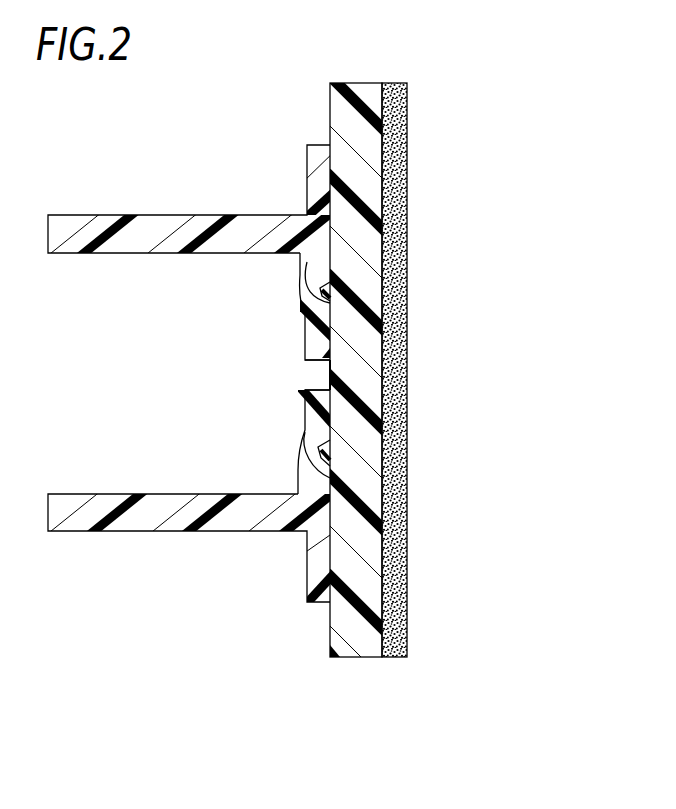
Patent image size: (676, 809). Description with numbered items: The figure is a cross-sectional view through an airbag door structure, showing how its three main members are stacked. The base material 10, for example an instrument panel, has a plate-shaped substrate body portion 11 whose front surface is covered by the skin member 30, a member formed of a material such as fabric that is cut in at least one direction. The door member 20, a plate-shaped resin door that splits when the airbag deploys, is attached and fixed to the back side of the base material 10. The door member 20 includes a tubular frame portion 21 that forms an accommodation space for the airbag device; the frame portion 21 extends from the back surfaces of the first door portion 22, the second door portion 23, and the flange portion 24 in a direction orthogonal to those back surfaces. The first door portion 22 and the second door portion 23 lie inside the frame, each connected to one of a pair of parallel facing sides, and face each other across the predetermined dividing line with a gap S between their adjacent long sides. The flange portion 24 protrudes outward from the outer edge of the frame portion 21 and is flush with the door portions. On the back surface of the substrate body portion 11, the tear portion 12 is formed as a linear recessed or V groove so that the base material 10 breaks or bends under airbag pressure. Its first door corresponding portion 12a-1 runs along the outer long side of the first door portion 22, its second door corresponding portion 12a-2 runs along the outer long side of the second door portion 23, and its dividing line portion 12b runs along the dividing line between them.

The base material 10 is at (454, 407).
The substrate body portion 11 is at (454, 402).
The tear portion 12 is at (454, 354).
The first door corresponding portion 12a-1 is at (322, 290).
The second door corresponding portion 12a-2 is at (345, 452).
The dividing line portion 12b is at (345, 362).
The door member 20 is at (215, 376).
The frame portion 21 is at (152, 255).
The first door portion 22 is at (302, 292).
The second door portion 23 is at (308, 440).
The flange portion 24 is at (316, 152).
The skin member 30 is at (408, 170).
The gap S is at (335, 365).